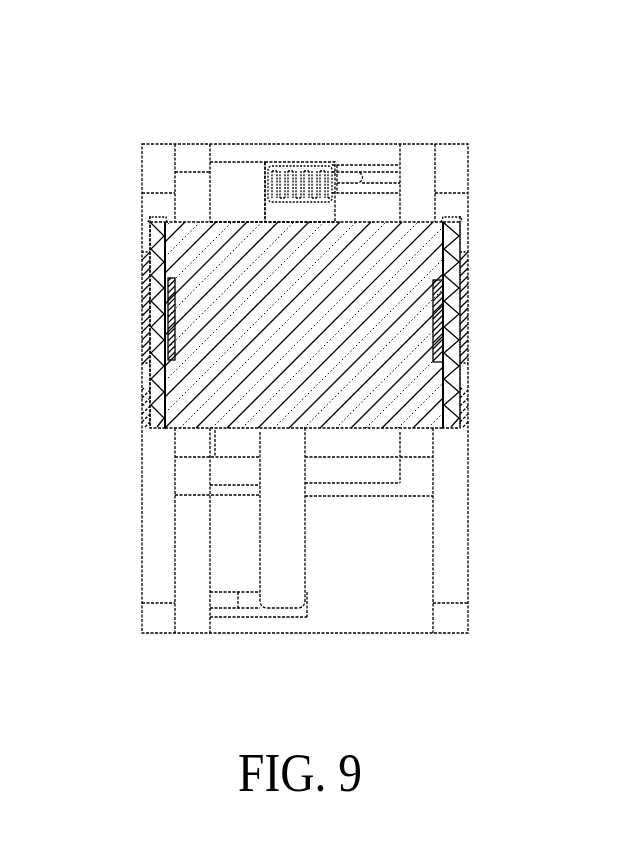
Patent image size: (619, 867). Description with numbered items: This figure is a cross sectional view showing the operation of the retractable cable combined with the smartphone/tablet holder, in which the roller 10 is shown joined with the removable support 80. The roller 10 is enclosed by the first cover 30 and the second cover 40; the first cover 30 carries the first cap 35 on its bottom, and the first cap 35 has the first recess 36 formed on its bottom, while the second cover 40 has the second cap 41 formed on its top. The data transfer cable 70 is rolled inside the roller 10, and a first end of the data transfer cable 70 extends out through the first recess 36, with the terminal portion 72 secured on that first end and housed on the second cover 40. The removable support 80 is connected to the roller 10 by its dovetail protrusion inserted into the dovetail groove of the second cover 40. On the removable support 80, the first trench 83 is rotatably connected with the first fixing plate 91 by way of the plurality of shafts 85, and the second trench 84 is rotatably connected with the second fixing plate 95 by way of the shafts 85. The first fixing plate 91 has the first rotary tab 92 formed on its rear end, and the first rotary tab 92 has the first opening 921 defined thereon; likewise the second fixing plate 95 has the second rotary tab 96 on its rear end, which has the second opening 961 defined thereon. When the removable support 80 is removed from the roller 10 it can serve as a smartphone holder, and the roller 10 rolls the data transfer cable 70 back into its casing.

The roller 10 is at (230, 145).
The first cover 30 is at (418, 150).
The first cap 35 is at (397, 610).
The first recess 36 is at (238, 612).
The second cover 40 is at (192, 147).
The second cap 41 is at (263, 147).
The data transfer cable 70 is at (300, 563).
The terminal portion 72 is at (310, 172).
The removable support 80 is at (423, 438).
The first trench 83 is at (468, 392).
The second trench 84 is at (147, 395).
The shafts 85 is at (157, 260).
The first fixing plate 91 is at (455, 160).
The first rotary tab 92 is at (468, 313).
The first opening 921 is at (462, 285).
The second fixing plate 95 is at (153, 162).
The second rotary tab 96 is at (143, 312).
The second opening 961 is at (150, 292).